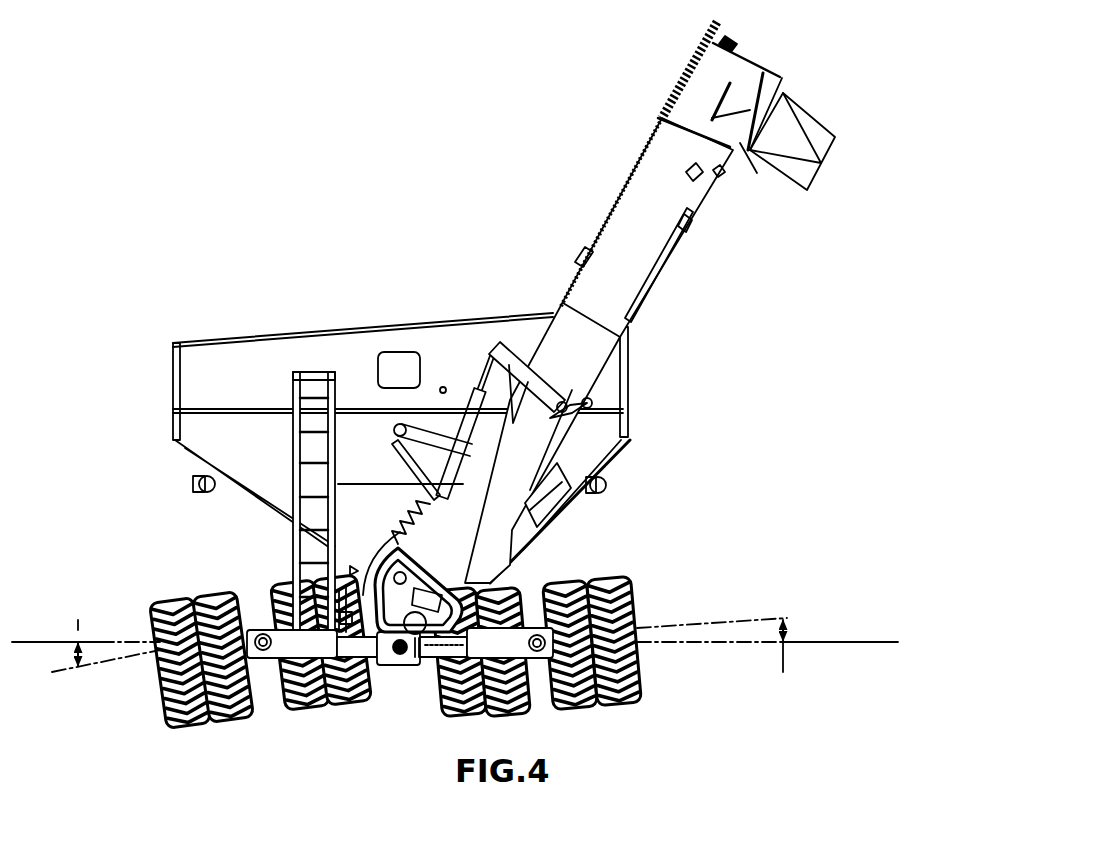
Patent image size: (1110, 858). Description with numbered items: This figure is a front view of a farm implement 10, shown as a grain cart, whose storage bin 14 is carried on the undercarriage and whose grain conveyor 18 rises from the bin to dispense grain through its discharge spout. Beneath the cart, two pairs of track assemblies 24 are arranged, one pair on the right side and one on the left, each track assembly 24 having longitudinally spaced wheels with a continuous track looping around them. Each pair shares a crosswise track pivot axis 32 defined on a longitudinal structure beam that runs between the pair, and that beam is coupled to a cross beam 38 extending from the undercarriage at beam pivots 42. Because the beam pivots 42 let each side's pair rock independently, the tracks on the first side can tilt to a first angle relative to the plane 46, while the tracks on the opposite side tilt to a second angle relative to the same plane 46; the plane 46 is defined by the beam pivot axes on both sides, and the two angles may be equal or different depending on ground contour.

The farm implement 10 is at (170, 232).
The storage bin 14 is at (173, 342).
The grain conveyor 18 is at (600, 221).
The track assemblies 24 is at (157, 600).
The track pivot axis 32 is at (72, 672).
The cross beam 38 is at (268, 660).
The beam pivots 42 is at (260, 630).
The plane 46 is at (858, 643).